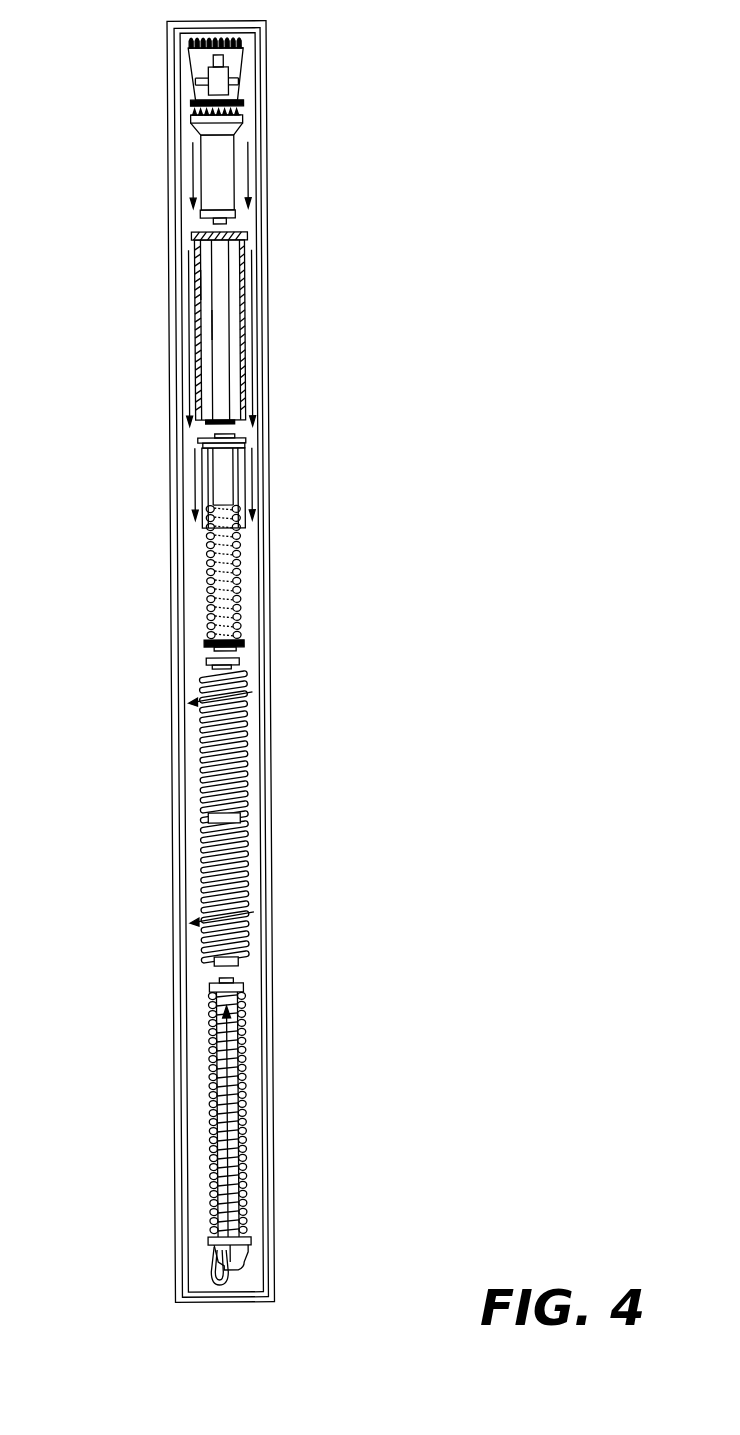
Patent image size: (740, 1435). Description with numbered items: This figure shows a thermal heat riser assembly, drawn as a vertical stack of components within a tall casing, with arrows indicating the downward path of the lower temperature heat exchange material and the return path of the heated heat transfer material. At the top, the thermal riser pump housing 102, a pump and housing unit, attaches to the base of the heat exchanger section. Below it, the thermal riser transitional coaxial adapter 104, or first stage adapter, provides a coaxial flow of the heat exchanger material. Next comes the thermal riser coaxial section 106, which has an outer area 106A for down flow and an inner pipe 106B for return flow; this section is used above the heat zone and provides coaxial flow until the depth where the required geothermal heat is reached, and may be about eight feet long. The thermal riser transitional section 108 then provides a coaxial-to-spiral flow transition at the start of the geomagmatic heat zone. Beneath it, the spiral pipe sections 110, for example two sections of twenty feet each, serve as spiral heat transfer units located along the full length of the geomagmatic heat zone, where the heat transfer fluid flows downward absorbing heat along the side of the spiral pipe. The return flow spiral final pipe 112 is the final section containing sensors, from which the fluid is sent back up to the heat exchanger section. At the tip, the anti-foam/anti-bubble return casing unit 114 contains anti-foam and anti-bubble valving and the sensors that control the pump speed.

The thermal riser pump housing 102 is at (285, 76).
The thermal riser transitional coaxial adapter 104 is at (286, 169).
The thermal riser coaxial section 106 is at (284, 329).
The outer area 106A is at (210, 283).
The inner pipe 106B is at (205, 322).
The thermal riser transitional section 108 is at (288, 542).
The spiral pipe sections 110 is at (287, 812).
The return flow spiral final pipe 112 is at (299, 1111).
The anti-foam/anti-bubble return casing unit 114 is at (301, 1264).